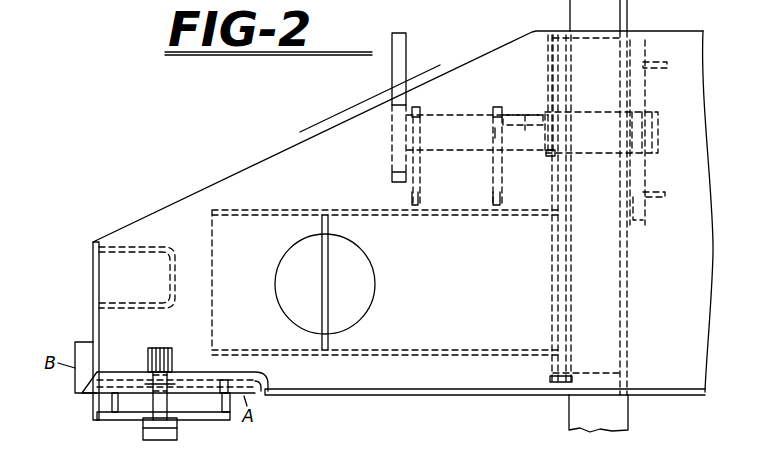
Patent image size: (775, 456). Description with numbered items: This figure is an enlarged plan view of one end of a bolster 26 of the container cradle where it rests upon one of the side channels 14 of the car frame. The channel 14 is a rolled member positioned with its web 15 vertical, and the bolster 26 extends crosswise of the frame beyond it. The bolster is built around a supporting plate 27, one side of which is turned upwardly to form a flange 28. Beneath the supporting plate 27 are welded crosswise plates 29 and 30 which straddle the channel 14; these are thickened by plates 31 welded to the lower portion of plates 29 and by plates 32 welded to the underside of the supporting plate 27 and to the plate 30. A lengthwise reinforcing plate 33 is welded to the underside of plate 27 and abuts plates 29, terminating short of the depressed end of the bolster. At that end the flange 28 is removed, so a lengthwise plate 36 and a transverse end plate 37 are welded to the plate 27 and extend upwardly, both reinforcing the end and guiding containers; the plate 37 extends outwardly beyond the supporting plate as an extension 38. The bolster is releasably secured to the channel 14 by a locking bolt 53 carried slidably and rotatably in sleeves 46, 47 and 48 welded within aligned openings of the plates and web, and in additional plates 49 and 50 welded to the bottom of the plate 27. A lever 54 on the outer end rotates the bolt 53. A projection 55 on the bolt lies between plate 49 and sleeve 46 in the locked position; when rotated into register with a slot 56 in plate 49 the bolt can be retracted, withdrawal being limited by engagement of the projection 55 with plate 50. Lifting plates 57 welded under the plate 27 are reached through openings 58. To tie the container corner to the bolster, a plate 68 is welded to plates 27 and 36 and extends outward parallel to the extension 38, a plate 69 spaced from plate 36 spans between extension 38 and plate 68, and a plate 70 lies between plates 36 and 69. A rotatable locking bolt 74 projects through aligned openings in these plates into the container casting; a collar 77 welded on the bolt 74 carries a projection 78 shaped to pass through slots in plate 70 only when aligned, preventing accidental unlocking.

The channel 14 is at (594, 428).
The web 15 is at (622, 301).
The bolster 26 is at (716, 250).
The supporting plate 27 is at (299, 131).
The flange 28 is at (401, 394).
The plate 29 is at (552, 28).
The plate 30 is at (646, 103).
The plate 31 is at (560, 88).
The plate 32 is at (630, 82).
The reinforcing plate 33 is at (281, 208).
The plate 36 is at (212, 373).
The plate 37 is at (92, 330).
The extension 38 is at (94, 411).
The sleeve 46 is at (549, 154).
The sleeve 47 is at (601, 153).
The sleeve 48 is at (650, 151).
The plate 49 is at (500, 107).
The plate 50 is at (419, 107).
The locking bolt 53 is at (448, 117).
The lever 54 is at (400, 44).
The projection 55 is at (523, 126).
The slot 56 is at (494, 134).
The plate 57 is at (328, 281).
The opening 58 is at (362, 303).
The plate 68 is at (227, 413).
The plate 69 is at (203, 421).
The plate 70 is at (117, 396).
The locking bolt 74 is at (164, 353).
The collar 77 is at (175, 376).
The projection 78 is at (158, 381).